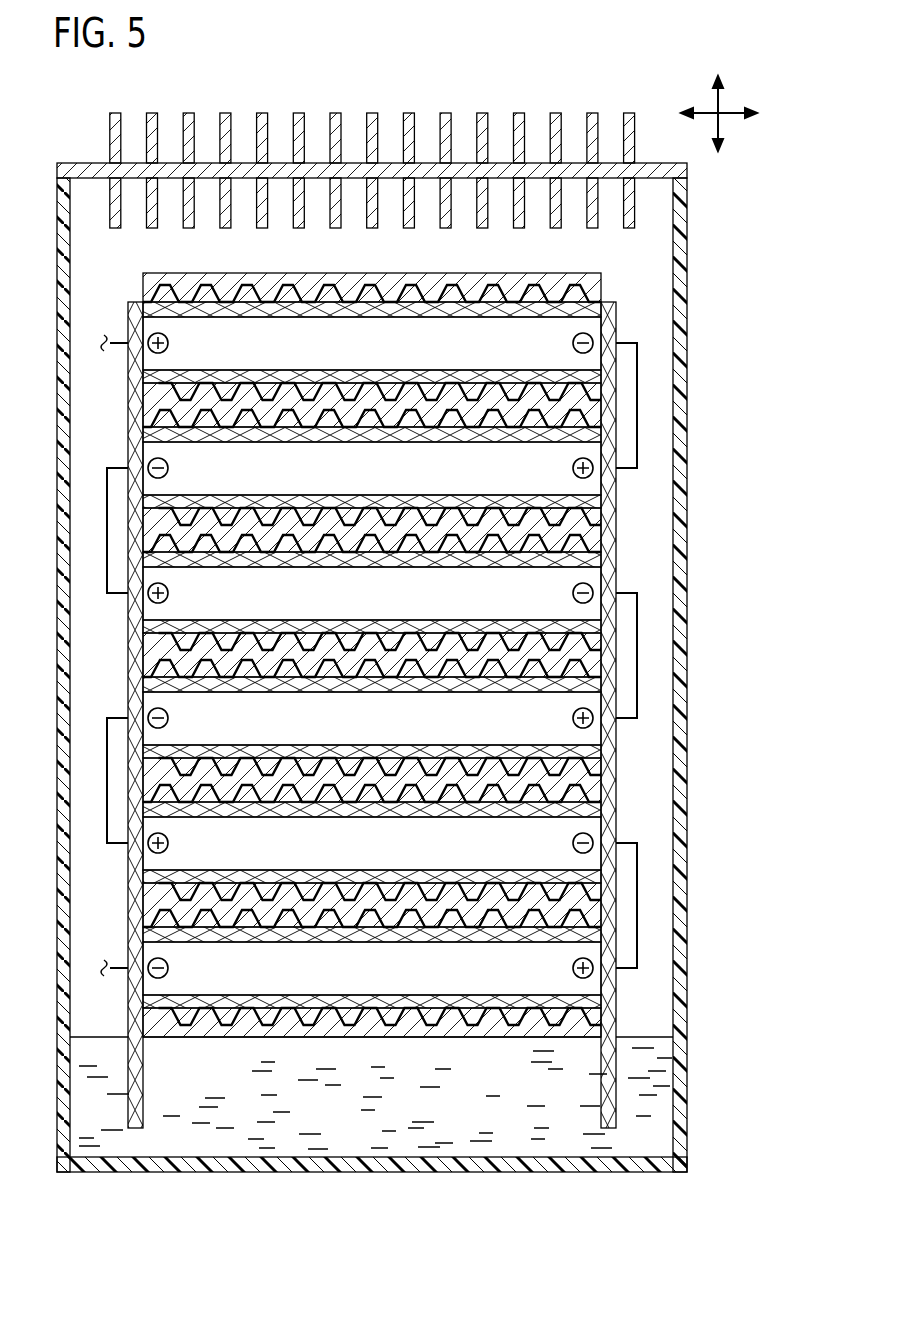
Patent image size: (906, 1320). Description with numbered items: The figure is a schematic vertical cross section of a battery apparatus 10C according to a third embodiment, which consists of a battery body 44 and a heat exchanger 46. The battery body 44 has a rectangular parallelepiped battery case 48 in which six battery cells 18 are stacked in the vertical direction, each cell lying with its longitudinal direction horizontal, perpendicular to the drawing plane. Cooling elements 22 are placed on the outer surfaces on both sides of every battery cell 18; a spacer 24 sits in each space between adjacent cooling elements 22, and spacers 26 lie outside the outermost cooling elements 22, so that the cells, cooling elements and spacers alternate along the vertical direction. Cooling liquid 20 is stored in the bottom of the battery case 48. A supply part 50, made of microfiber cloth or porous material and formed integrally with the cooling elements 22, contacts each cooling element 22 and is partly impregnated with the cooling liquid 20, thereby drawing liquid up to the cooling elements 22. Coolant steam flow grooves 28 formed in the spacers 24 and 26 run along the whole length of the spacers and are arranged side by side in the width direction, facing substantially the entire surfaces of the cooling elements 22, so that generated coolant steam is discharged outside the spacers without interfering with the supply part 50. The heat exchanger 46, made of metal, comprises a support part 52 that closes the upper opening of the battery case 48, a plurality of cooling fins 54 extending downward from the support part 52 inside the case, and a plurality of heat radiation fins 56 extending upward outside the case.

The battery apparatus 10C is at (272, 56).
The battery cell 18 is at (245, 468).
The cooling liquid 20 is at (653, 1103).
The cooling element 22 is at (288, 378).
The spacer 24 is at (227, 405).
The spacer 26 is at (387, 273).
The coolant steam flow groove 28 is at (372, 395).
The battery body 44 is at (700, 234).
The heat exchanger 46 is at (639, 90).
The battery case 48 is at (689, 404).
The supply part 50 is at (128, 325).
The support part 52 is at (90, 163).
The cooling fin 54 is at (188, 229).
The heat radiation fin 56 is at (191, 112).